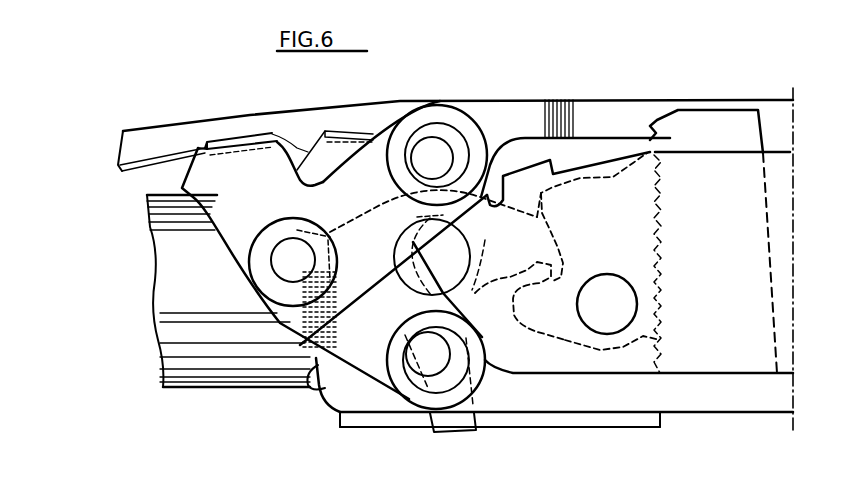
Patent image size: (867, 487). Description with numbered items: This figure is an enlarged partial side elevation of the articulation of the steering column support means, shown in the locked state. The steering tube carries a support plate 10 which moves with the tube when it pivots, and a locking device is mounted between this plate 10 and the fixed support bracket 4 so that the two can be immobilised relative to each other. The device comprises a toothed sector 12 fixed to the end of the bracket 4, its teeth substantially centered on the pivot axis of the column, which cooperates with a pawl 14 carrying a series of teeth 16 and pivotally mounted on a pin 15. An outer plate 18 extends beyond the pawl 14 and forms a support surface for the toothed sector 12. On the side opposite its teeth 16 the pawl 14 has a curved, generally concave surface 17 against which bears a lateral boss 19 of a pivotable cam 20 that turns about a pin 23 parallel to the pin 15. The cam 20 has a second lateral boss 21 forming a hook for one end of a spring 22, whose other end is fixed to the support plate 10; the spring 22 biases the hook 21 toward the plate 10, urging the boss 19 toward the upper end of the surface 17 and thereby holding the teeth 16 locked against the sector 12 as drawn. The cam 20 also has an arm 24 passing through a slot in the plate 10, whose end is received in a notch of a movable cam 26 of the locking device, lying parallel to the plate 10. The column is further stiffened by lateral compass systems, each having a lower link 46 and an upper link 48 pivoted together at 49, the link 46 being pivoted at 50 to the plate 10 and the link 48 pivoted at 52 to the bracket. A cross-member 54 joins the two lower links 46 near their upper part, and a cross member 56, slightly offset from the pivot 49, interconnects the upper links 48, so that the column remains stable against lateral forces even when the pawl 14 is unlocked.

The support bracket 4 is at (543, 98).
The support plate 10 is at (730, 398).
The toothed sector 12 is at (717, 130).
The pawl 14 is at (670, 345).
The pin 15 is at (627, 302).
The teeth 16 is at (650, 190).
The curved concave surface 17 is at (560, 230).
The outer plate 18 is at (787, 250).
The lateral boss 19 is at (542, 283).
The pivotable cam 20 is at (475, 293).
The second lateral boss 21 is at (305, 228).
The spring 22 is at (303, 353).
The pin 23 is at (439, 257).
The arm 24 is at (450, 432).
The cam 26 is at (367, 420).
The link 46 is at (363, 352).
The link 48 is at (295, 273).
The pivot 49 is at (273, 267).
The pivot 50 is at (440, 362).
The pivot 52 is at (437, 150).
The cross-member 54 is at (345, 130).
The cross member 56 is at (242, 133).